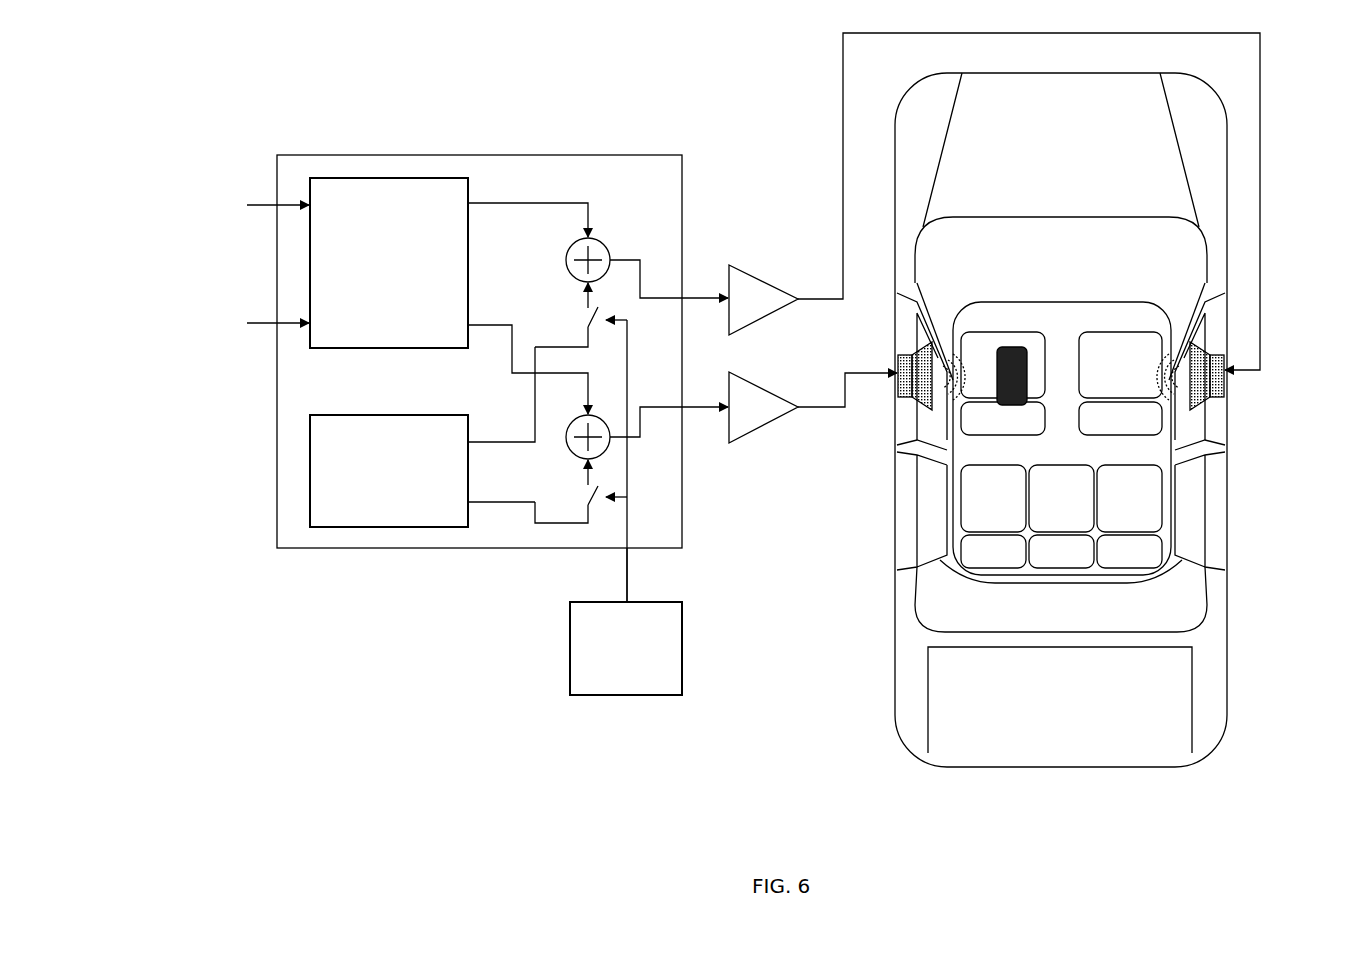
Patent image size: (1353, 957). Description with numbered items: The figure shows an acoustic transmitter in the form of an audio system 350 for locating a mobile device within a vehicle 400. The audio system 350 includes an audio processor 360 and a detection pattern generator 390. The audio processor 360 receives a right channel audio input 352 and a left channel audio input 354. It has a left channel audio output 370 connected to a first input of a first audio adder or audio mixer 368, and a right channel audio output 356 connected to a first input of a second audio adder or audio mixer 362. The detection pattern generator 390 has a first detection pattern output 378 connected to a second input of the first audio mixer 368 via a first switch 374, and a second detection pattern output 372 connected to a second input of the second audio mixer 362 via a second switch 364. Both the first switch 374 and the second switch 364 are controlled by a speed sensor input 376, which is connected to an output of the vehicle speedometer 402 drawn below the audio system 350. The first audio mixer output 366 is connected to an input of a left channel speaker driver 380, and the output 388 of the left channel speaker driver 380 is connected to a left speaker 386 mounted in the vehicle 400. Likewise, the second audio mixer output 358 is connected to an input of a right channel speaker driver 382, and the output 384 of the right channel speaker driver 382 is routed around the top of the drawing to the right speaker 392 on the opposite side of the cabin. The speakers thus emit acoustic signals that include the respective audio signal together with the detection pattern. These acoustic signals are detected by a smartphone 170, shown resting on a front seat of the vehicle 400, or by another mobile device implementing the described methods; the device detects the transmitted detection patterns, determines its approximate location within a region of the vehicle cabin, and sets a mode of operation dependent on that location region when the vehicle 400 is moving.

The smartphone 170 is at (1012, 345).
The audio system 350 is at (487, 153).
The right channel audio input 352 is at (250, 203).
The left channel audio input 354 is at (250, 321).
The right channel audio output 356 is at (565, 203).
The second audio mixer output 358 is at (640, 258).
The audio processor 360 is at (375, 178).
The second audio adder or audio mixer 362 is at (566, 254).
The second switch 364 is at (590, 322).
The first audio mixer output 366 is at (668, 407).
The first audio adder or audio mixer 368 is at (595, 410).
The left channel audio output 370 is at (490, 330).
The second detection pattern output 372 is at (498, 439).
The first switch 374 is at (590, 500).
The speed sensor input 376 is at (625, 568).
The first detection pattern output 378 is at (487, 503).
The left channel speaker driver 380 is at (773, 420).
The right channel speaker driver 382 is at (770, 278).
The output of the right channel speaker driver 384 is at (843, 42).
The left speaker 386 is at (897, 357).
The output of the left channel speaker driver 388 is at (843, 410).
The detection pattern generator 390 is at (310, 480).
The right speaker 392 is at (1227, 386).
The vehicle 400 is at (1228, 533).
The vehicle speedometer 402 is at (570, 636).